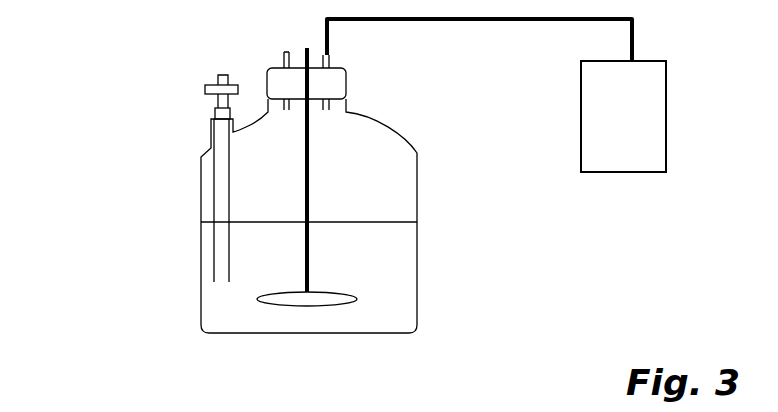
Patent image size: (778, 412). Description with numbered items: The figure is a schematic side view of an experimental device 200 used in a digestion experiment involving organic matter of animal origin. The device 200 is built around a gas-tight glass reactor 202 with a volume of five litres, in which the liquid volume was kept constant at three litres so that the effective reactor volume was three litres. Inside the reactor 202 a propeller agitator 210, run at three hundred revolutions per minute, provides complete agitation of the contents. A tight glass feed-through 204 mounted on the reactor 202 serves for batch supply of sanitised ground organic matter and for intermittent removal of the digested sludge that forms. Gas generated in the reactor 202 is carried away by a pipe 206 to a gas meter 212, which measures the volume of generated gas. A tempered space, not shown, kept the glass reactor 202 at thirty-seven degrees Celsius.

The experimental device 200 is at (76, 127).
The gas-tight glass reactor 202 is at (201, 292).
The tight glass feed-through 204 is at (218, 96).
The pipe 206 is at (480, 19).
The propeller agitator 210 is at (309, 248).
The gas meter 212 is at (630, 172).